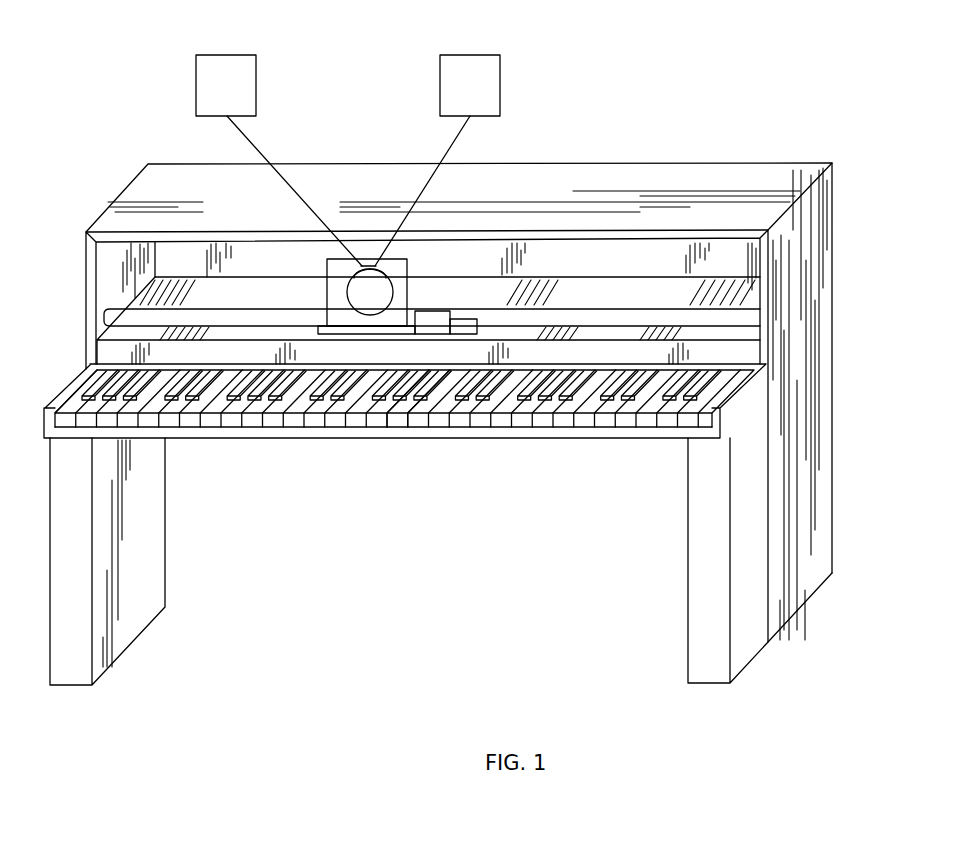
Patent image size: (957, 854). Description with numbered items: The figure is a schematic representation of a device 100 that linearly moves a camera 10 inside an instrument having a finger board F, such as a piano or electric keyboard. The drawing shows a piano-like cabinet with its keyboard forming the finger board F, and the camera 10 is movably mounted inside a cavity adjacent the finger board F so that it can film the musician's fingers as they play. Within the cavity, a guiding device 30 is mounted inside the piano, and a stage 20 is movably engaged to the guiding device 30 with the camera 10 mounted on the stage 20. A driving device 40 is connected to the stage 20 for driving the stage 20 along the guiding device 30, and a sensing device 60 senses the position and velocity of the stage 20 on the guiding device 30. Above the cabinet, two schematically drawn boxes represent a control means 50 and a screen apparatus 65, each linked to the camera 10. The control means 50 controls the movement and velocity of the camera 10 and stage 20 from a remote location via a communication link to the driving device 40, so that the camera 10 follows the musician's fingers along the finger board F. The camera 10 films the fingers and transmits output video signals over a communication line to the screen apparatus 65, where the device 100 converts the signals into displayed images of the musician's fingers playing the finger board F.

The device 100 is at (884, 164).
The screen apparatus 65 is at (248, 102).
The control means 50 is at (492, 102).
The camera 10 is at (355, 291).
The stage 20 is at (324, 328).
The guiding device 30 is at (735, 319).
The driving device 40 is at (428, 318).
The sensing device 60 is at (463, 325).
The finger board F is at (400, 400).